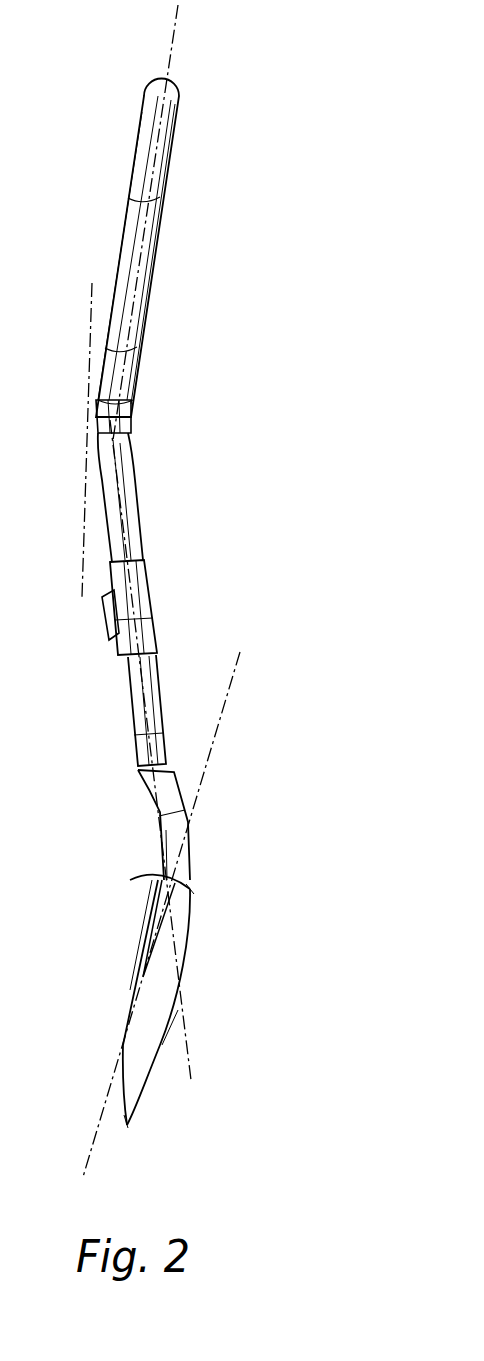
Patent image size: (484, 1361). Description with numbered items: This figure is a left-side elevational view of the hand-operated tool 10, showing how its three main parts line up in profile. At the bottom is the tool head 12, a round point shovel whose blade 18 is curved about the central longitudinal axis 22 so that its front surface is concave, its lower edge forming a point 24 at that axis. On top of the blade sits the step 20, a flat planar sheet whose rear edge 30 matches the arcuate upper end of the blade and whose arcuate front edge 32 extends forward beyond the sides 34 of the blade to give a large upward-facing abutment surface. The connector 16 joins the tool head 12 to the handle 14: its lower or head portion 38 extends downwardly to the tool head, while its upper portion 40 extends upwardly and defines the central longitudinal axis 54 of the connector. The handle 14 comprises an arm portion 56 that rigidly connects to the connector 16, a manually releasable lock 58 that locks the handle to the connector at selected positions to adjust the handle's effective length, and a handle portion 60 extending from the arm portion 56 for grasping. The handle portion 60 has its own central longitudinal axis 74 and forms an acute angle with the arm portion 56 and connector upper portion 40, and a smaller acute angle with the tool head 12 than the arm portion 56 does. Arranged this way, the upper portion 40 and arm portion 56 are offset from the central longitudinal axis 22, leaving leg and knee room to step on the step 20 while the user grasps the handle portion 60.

The hand-operated tool 10 is at (61, 666).
The tool head 12 is at (165, 1032).
The handle 14 is at (83, 428).
The connector 16 is at (140, 799).
The blade 18 is at (154, 1061).
The step 20 is at (193, 888).
The central longitudinal axis 22 is at (85, 1165).
The point 24 is at (128, 1129).
The rear edge 30 is at (192, 890).
The front edge 32 is at (154, 880).
The sides 34 is at (138, 966).
The lower portion 38 is at (191, 861).
The upper portion 40 is at (160, 718).
The central longitudinal axis of the connector 54 is at (90, 300).
The arm portion 56 is at (133, 470).
The manually releasable lock 58 is at (148, 607).
The handle portion 60 is at (170, 177).
The central longitudinal axis of the handle portion 74 is at (174, 36).